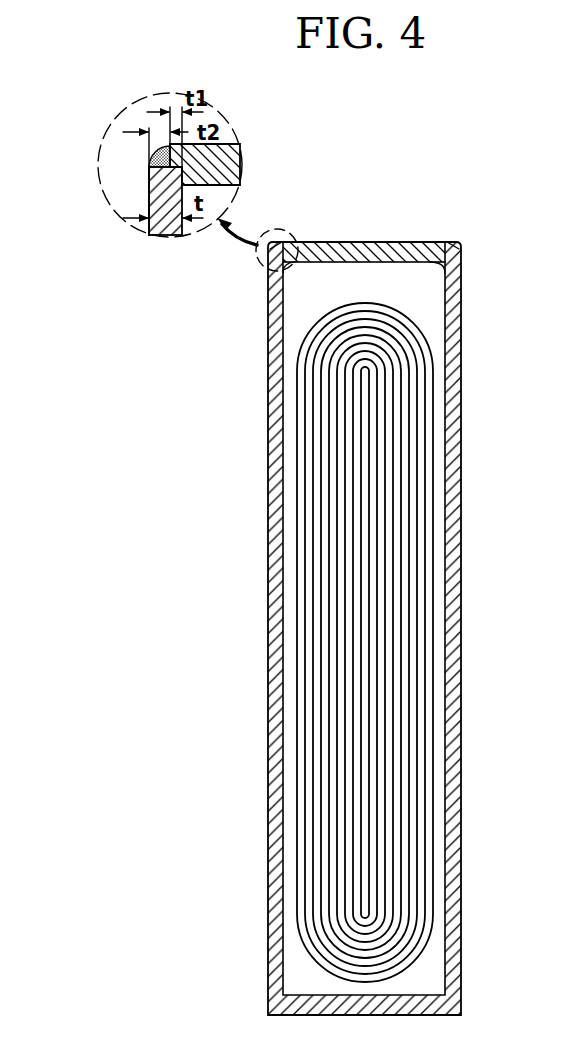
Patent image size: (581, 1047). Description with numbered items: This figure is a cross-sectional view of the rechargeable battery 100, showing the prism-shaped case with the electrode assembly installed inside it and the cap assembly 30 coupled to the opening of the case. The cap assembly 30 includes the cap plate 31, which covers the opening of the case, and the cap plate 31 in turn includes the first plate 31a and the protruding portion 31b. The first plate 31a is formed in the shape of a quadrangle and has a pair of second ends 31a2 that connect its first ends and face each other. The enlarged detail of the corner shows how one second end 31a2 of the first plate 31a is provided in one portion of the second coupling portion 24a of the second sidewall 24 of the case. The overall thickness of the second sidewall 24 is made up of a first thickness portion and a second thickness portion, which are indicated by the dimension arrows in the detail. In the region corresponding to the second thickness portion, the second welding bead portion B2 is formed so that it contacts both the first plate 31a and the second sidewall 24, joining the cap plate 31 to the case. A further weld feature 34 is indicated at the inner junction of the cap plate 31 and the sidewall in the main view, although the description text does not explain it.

The rechargeable battery 100 is at (477, 115).
The cap assembly 30 is at (379, 240).
The cap plate 31 is at (427, 242).
The first plate 31a is at (220, 145).
The protruding portion 31b is at (217, 187).
The second end 31a2 is at (148, 148).
The second welding bead portion B2 is at (148, 153).
The second sidewall 24 is at (230, 214).
The second coupling portion 24a is at (148, 167).
The weld portion 34 is at (447, 272).